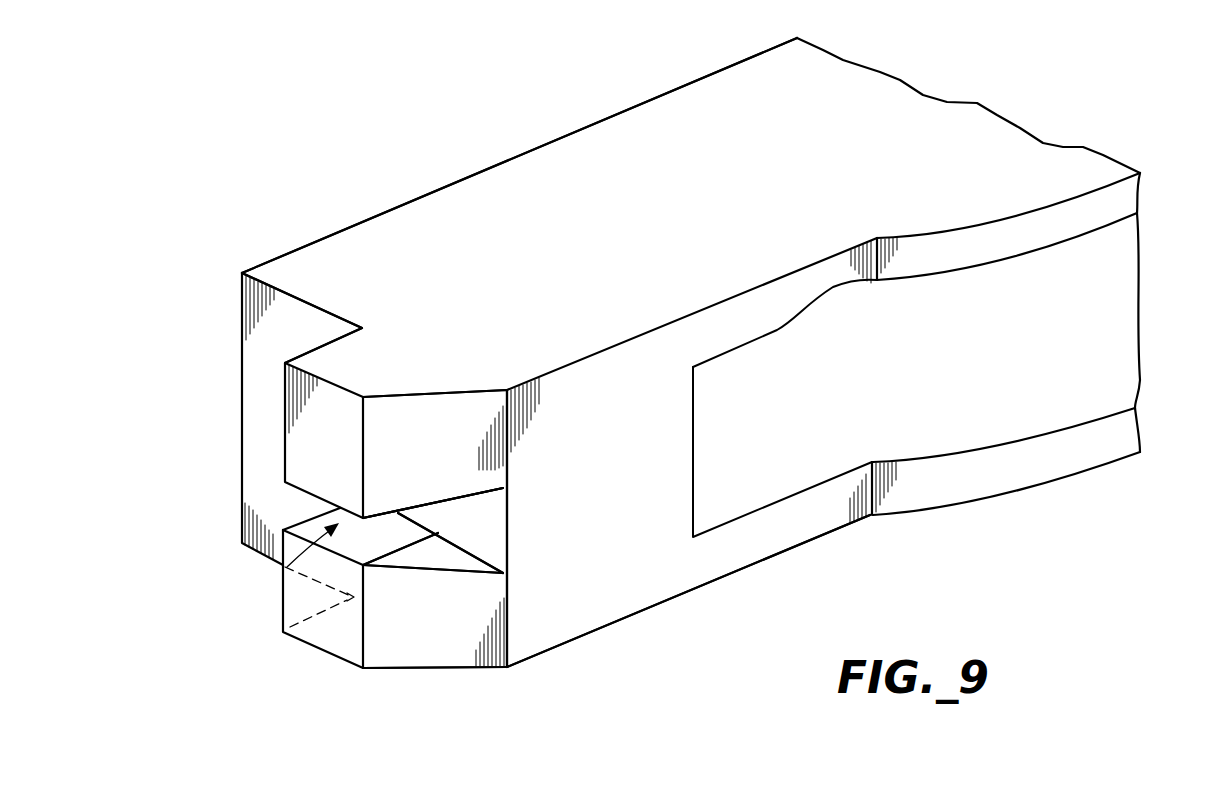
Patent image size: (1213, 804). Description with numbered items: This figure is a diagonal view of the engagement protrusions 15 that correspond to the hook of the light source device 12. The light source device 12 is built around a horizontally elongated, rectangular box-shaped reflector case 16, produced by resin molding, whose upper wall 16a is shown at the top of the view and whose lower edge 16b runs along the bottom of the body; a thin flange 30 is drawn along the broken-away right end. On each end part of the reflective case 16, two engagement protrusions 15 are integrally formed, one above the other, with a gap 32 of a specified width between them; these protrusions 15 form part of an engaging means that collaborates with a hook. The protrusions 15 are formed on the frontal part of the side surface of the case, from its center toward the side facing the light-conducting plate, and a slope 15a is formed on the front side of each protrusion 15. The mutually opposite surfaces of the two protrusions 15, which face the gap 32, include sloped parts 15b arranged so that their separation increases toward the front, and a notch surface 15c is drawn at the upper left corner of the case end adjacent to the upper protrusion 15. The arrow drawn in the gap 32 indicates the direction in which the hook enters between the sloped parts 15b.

The light source device 12 is at (503, 122).
The engagement protrusions 15 is at (302, 448).
The slope 15a is at (473, 457).
The sloped parts 15b is at (483, 493).
The notch surface 15c is at (317, 343).
The reflector case 16 is at (694, 97).
The upper wall 16a is at (902, 95).
The bottom edge 16b is at (768, 538).
The flange 30 is at (1115, 193).
The gap 32 is at (287, 567).